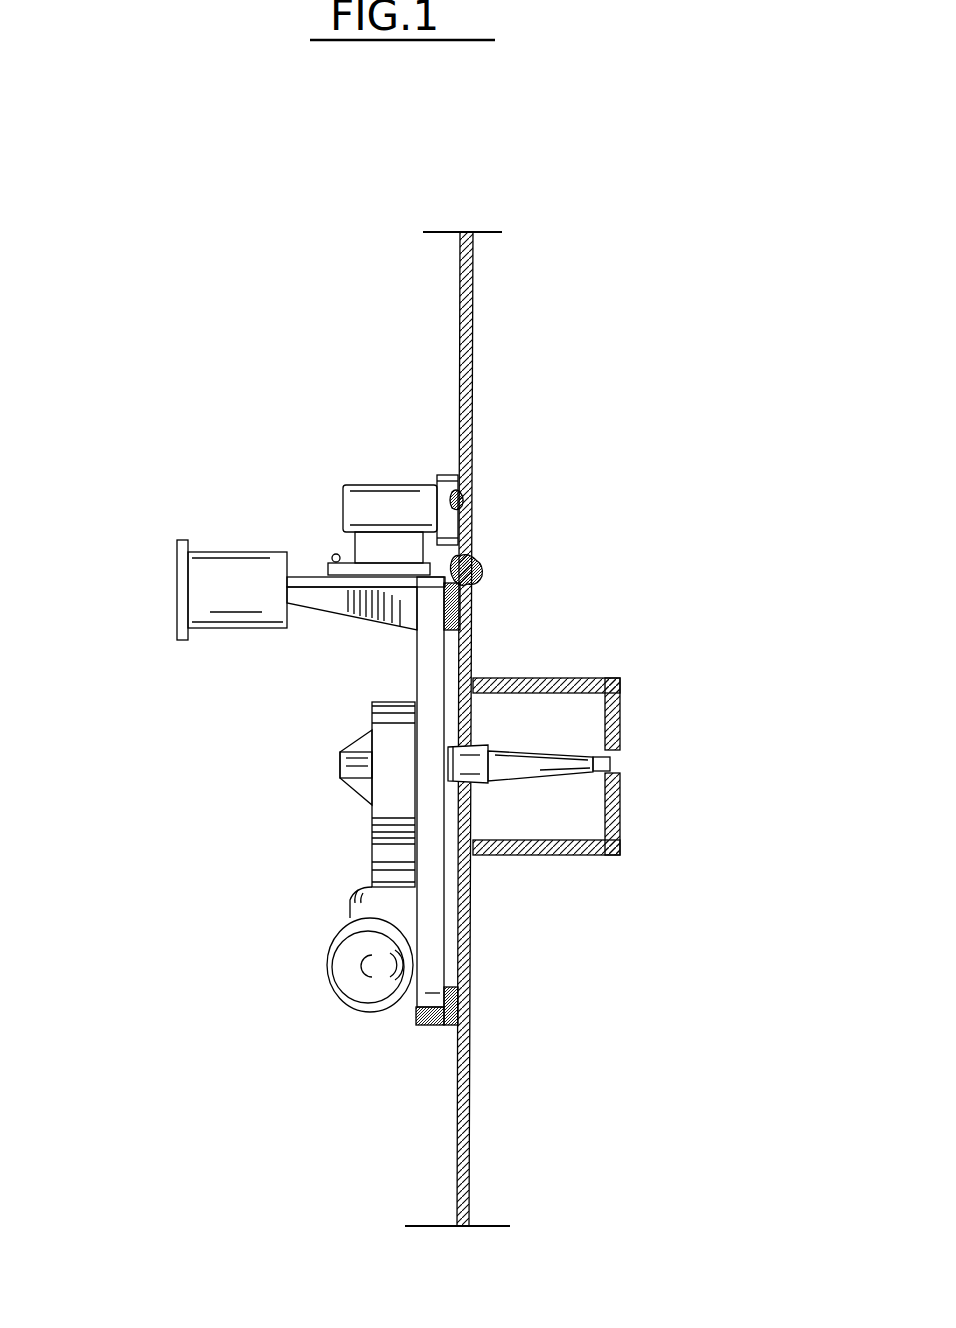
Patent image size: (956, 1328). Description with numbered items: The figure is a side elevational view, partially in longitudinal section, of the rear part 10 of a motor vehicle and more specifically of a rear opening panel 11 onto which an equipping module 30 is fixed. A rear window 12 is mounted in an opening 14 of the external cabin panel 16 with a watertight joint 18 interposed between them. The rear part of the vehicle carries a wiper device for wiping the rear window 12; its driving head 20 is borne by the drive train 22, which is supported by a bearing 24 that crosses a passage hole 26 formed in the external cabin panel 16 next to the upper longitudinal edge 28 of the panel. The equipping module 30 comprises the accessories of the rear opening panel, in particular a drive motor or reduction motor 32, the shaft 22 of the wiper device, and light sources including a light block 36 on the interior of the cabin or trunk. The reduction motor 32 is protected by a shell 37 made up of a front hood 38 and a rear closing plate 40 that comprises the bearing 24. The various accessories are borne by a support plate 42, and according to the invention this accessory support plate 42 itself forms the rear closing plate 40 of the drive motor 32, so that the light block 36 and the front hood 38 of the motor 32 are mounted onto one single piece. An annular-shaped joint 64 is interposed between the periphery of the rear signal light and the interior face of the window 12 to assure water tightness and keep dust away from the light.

The rear part of motor vehicle 10 is at (548, 267).
The rear opening panel 11 is at (385, 1152).
The rear window 12 is at (473, 327).
The opening 14 is at (428, 449).
The external cabin panel 16 is at (473, 655).
The watertight joint 18 is at (482, 572).
The driving head 20 is at (620, 703).
The drive train 22 is at (620, 750).
The bearing 24 is at (577, 773).
The passage hole 26 is at (473, 740).
The upper longitudinal edge 28 is at (450, 607).
The equipping module 30 is at (195, 820).
The drive motor 32 is at (333, 947).
The light block 36 is at (177, 602).
The shell 37 is at (327, 815).
The front hood 38 is at (400, 855).
The rear closing plate 40 is at (430, 1028).
The support plate 42 is at (308, 555).
The annular-shaped joint 64 is at (462, 500).